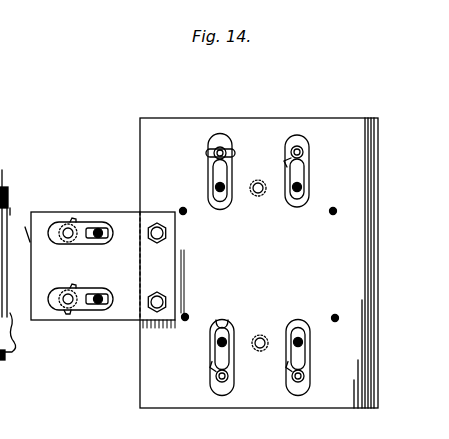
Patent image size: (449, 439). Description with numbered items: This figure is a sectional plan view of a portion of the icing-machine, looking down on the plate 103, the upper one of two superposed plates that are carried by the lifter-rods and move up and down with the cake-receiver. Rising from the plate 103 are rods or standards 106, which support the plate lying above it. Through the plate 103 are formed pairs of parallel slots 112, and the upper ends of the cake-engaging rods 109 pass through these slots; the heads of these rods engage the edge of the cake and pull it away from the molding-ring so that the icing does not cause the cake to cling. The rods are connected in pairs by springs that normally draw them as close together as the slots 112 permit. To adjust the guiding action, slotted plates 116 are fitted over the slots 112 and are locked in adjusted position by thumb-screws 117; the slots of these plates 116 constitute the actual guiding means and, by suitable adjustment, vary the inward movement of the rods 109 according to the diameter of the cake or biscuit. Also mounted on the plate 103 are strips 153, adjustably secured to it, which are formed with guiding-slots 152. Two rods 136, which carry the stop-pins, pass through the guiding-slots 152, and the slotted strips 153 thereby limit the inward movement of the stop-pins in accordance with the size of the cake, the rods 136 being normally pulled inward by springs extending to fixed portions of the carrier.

The plate 103 is at (420, 158).
The rods or standards 106 is at (98, 229).
The cake-engaging rods 109 is at (228, 192).
The parallel slots 112 is at (262, 314).
The slotted plates 116 is at (232, 146).
The thumb-screws 117 is at (218, 148).
The rods 136 is at (95, 305).
The guiding-slots 152 is at (127, 277).
The strips 153 is at (75, 277).